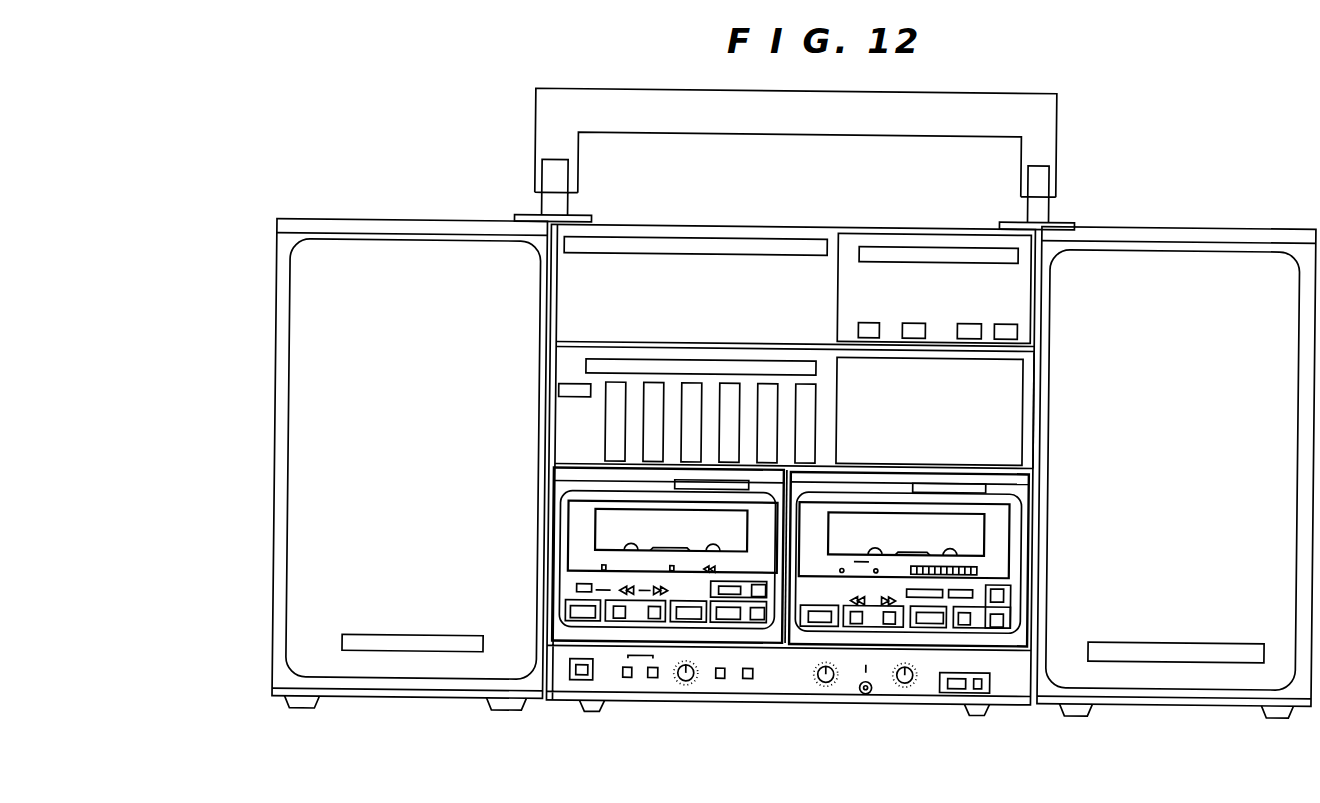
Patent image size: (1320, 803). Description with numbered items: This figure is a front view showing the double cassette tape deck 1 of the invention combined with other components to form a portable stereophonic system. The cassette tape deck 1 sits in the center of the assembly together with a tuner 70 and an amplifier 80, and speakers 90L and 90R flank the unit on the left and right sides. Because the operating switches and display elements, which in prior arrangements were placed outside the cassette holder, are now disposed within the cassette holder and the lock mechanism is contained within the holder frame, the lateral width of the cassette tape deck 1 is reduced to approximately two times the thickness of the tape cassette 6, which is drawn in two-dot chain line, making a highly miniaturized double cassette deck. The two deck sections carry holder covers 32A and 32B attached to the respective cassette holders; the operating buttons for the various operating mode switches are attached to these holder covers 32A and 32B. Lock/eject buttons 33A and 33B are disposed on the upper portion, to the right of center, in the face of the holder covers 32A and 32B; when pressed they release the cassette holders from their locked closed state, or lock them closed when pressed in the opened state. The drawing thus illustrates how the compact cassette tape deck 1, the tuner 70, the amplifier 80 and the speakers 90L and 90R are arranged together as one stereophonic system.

The cassette tape deck 1 is at (735, 712).
The tape cassette 6 is at (560, 542).
The tuner 70 is at (770, 223).
The amplifier 80 is at (1042, 395).
The left speaker 90L is at (273, 484).
The right speaker 90R is at (1207, 226).
The lock/eject button 33A is at (585, 485).
The lock/eject button 33B is at (1022, 489).
The holder cover 32A is at (572, 632).
The holder cover 32B is at (1001, 638).